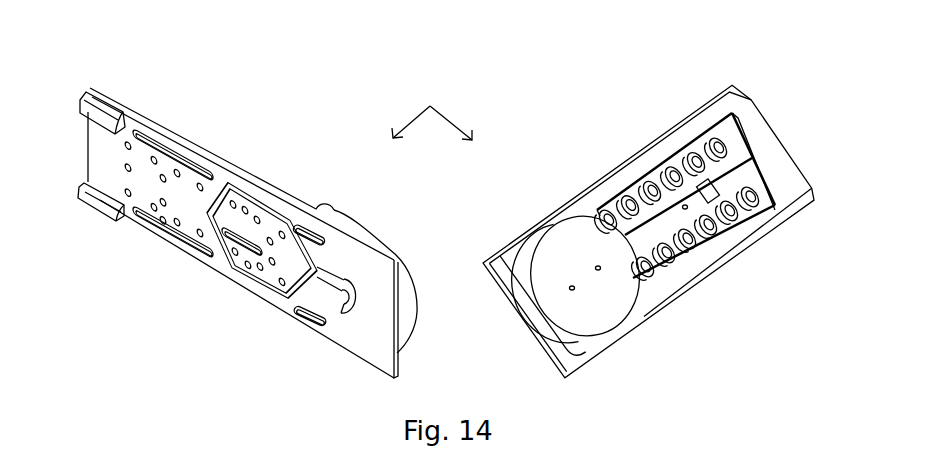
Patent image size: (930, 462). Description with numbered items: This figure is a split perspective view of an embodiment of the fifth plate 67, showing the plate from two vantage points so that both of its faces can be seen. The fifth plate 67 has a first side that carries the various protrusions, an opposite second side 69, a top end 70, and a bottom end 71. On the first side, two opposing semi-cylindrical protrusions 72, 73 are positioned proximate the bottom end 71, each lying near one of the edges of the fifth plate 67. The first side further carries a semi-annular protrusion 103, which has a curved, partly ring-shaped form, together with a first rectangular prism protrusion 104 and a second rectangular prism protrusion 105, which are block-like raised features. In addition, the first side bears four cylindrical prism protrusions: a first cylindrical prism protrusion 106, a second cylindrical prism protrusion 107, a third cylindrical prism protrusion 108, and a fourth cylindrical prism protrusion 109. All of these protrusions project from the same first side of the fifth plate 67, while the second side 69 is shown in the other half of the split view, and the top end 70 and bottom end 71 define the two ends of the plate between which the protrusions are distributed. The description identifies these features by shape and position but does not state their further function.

The fifth plate 67 is at (432, 112).
The second side 69 is at (640, 158).
The top end 70 is at (399, 348).
The bottom end 71 is at (88, 153).
The semi-cylindrical protrusion 72 is at (110, 109).
The semi-cylindrical protrusion 73 is at (88, 203).
The semi-annular protrusion 103 is at (361, 287).
The first rectangular prism protrusion 104 is at (310, 326).
The second rectangular prism protrusion 105 is at (323, 221).
The first cylindrical prism protrusion 106 is at (239, 270).
The second cylindrical prism protrusion 107 is at (155, 229).
The third cylindrical prism protrusion 108 is at (246, 201).
The fourth cylindrical prism protrusion 109 is at (174, 150).